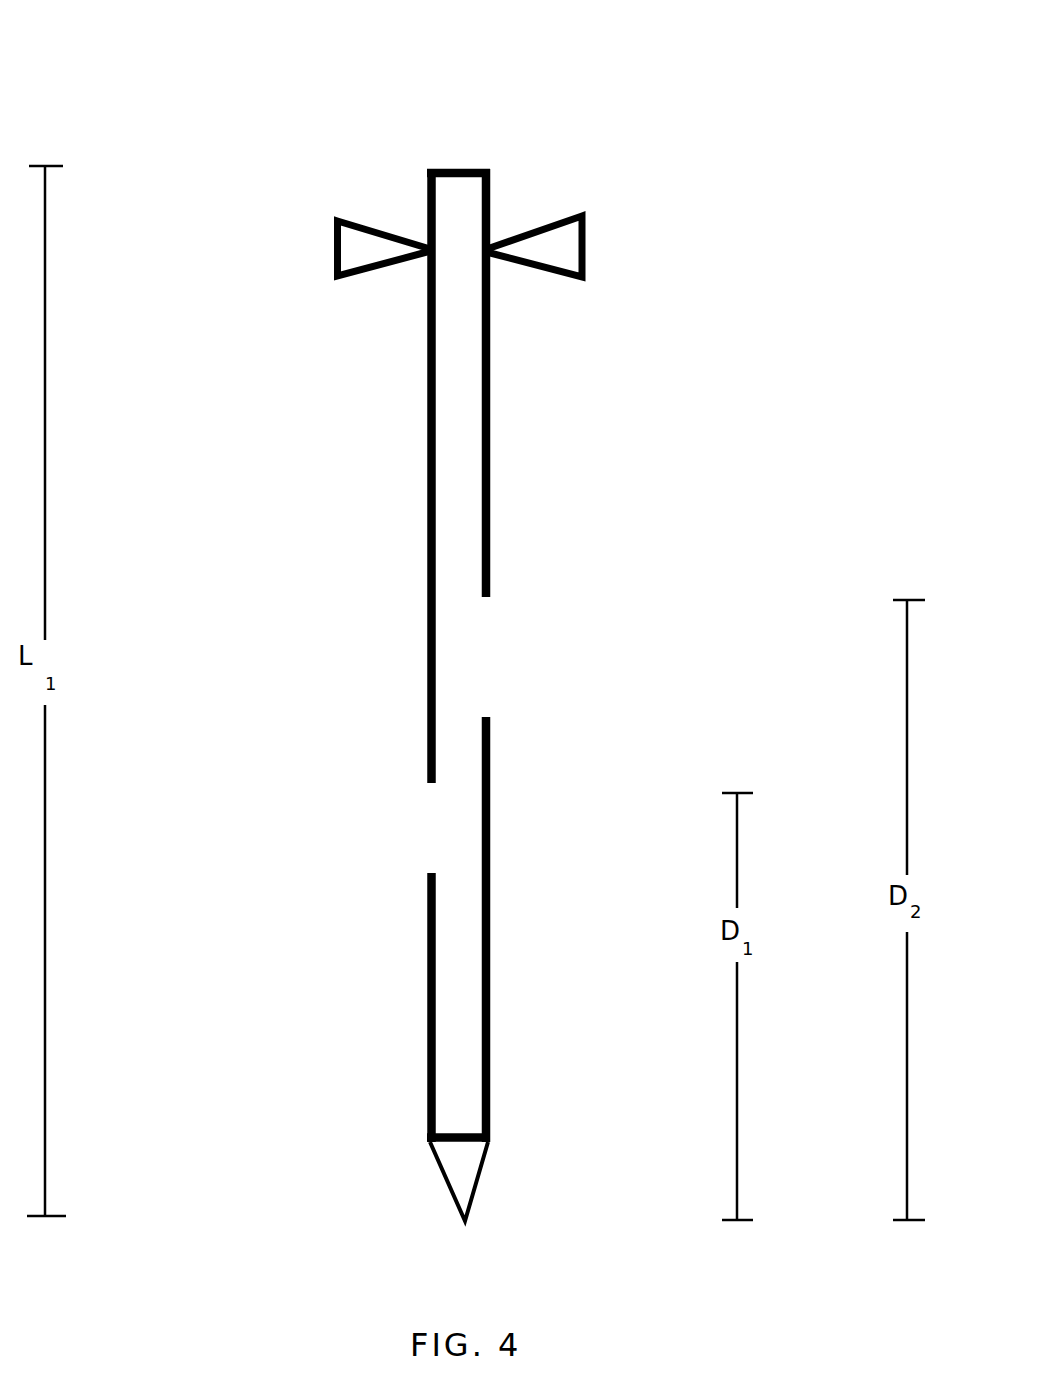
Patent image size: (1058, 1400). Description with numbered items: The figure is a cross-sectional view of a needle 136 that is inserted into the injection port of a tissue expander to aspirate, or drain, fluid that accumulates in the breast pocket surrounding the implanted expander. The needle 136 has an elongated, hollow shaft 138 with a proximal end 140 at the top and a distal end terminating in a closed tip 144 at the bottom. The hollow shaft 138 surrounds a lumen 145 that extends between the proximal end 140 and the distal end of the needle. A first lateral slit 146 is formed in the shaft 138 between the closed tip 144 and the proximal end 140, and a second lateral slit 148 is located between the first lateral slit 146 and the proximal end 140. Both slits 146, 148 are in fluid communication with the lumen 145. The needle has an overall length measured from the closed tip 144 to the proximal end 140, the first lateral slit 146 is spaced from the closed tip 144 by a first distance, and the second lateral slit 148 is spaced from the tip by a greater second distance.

The needle 136 is at (245, 174).
The elongated hollow shaft 138 is at (490, 425).
The proximal end 140 is at (516, 177).
The closed tip 144 is at (448, 1180).
The lumen 145 is at (452, 518).
The first lateral slit 146 is at (418, 830).
The second lateral slit 148 is at (497, 647).